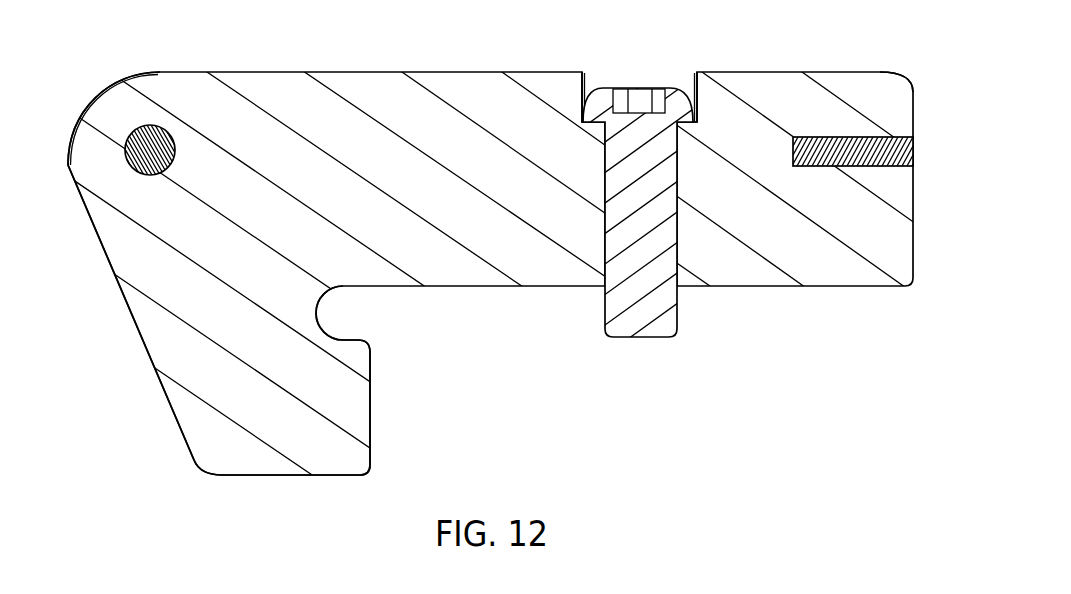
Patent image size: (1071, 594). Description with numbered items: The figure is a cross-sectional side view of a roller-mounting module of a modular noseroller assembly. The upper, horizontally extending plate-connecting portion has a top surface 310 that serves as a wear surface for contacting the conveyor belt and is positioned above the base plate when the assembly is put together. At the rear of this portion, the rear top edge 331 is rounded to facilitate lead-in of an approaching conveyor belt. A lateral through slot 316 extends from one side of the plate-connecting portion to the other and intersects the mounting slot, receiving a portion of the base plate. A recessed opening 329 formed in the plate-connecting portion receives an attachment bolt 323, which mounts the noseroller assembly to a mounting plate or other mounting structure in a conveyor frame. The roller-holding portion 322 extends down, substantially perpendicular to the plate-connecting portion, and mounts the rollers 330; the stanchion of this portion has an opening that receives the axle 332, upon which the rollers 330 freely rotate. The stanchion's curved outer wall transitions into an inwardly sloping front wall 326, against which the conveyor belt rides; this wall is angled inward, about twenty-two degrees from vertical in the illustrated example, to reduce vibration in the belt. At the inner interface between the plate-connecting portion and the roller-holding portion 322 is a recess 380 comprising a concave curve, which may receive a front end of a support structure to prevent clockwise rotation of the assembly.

The top surface 310 is at (358, 70).
The lateral through slot 316 is at (913, 137).
The roller-holding portion 322 is at (262, 412).
The attachment bolt 323 is at (142, 126).
The sloping front wall 326 is at (104, 251).
The recessed opening 329 is at (678, 71).
The rollers 330 is at (86, 108).
The rear top edge 331 is at (887, 74).
The axle 332 is at (153, 152).
The recess 380 is at (350, 312).